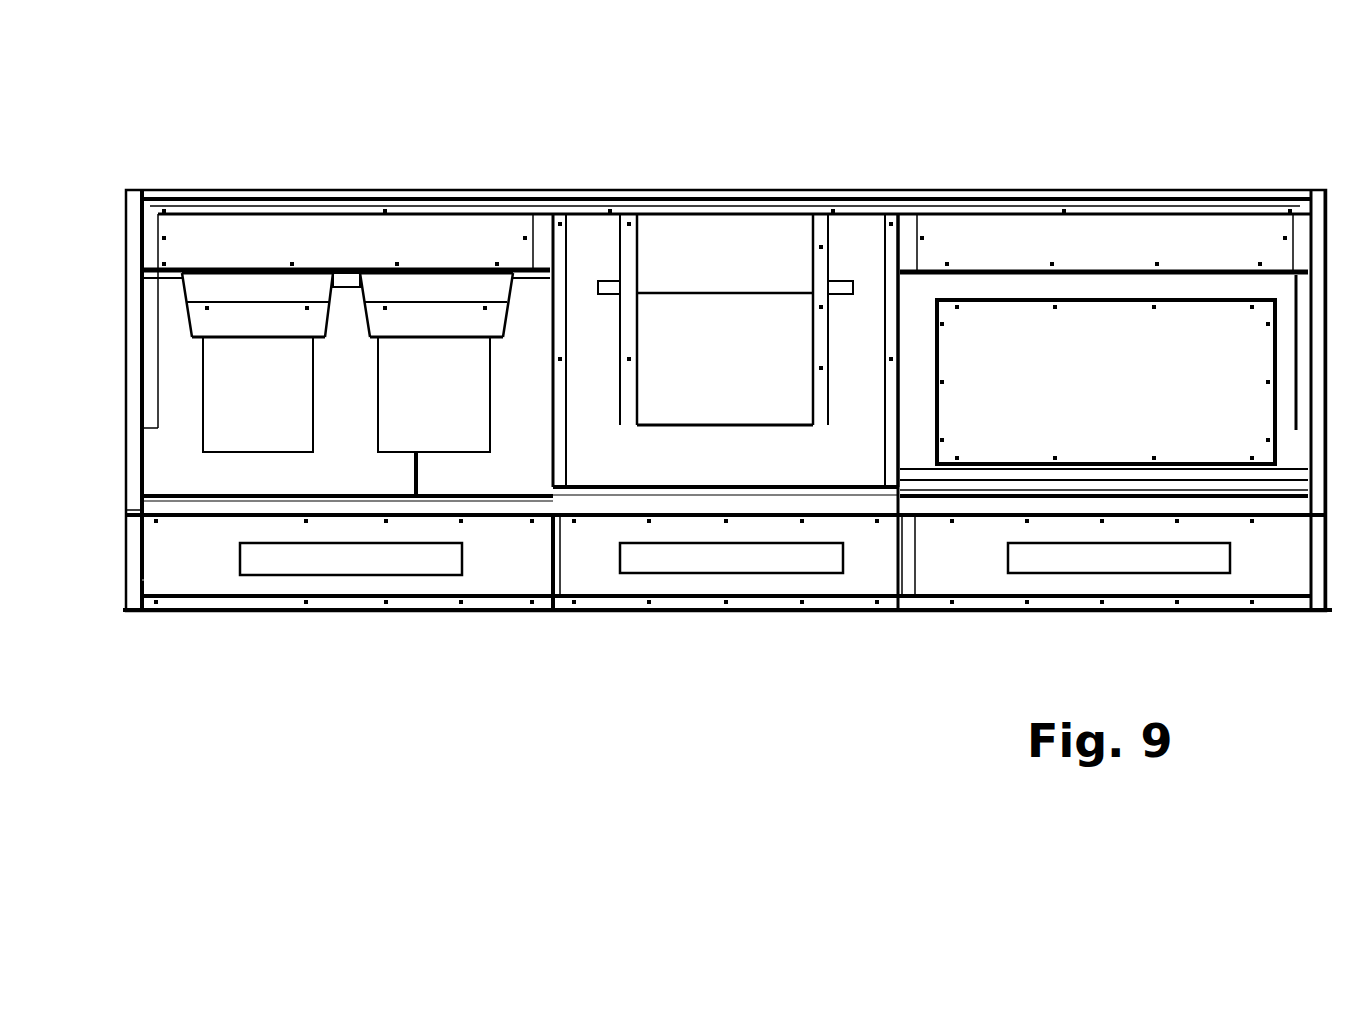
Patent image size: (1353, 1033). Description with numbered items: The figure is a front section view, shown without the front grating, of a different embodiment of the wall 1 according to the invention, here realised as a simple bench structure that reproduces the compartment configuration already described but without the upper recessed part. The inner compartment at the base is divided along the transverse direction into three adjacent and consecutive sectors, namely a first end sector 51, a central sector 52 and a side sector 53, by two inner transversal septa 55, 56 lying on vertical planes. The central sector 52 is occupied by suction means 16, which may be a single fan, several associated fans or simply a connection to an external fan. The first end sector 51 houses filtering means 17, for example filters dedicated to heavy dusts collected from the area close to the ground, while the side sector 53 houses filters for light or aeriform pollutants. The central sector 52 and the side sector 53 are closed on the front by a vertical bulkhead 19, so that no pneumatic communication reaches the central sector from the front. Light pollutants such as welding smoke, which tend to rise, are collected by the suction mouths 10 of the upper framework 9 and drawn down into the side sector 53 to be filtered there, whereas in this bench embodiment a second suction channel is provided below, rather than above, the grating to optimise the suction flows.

The wall 1 is at (473, 183).
The filtering means 17 is at (415, 365).
The inner transversal septum 55 is at (562, 303).
The suction means 16 is at (713, 323).
The inner transversal septum 56 is at (892, 287).
The vertical bulkhead 19 is at (1040, 352).
The suction mouth 10 is at (280, 558).
The upper framework 9 is at (500, 573).
The end sector 51 is at (525, 435).
The central sector 52 is at (838, 457).
The side sector 53 is at (920, 437).